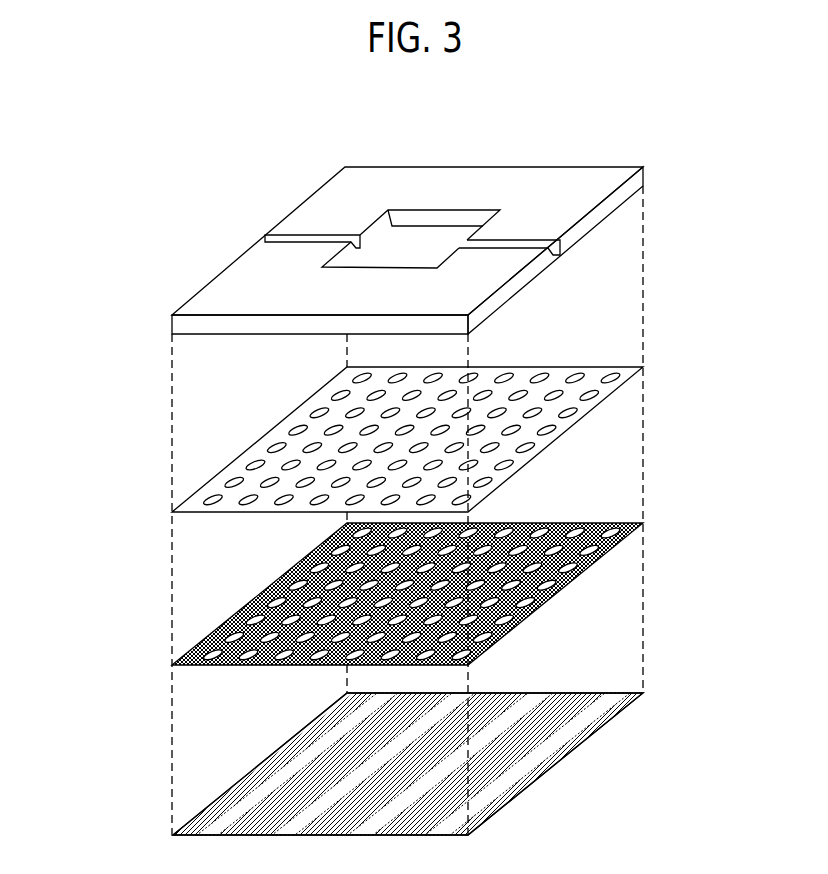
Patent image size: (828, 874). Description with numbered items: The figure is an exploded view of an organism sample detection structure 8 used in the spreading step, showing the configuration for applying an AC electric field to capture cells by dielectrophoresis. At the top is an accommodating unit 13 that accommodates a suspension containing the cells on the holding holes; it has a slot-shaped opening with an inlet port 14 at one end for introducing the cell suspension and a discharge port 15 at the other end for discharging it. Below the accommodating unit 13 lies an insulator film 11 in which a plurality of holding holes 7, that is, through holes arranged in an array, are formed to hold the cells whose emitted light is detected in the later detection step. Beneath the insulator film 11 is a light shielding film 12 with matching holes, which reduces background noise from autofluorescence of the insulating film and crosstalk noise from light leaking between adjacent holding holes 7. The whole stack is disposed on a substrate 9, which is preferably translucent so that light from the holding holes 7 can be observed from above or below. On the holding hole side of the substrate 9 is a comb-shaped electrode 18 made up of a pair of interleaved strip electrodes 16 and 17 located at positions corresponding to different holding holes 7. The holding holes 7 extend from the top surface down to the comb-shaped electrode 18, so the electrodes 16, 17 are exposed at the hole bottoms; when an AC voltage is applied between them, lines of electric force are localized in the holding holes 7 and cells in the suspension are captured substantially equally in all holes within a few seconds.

The organism sample detection structure 8 is at (385, 466).
The accommodating unit 13 is at (243, 297).
The inlet port 14 is at (314, 234).
The discharge port 15 is at (535, 240).
The holding holes 7 is at (538, 382).
The insulator film 11 is at (240, 458).
The light shielding film 12 is at (258, 600).
The comb-shaped electrode 18 is at (170, 695).
The electrode 16 is at (318, 763).
The electrode 17 is at (228, 808).
The substrate 9 is at (542, 790).